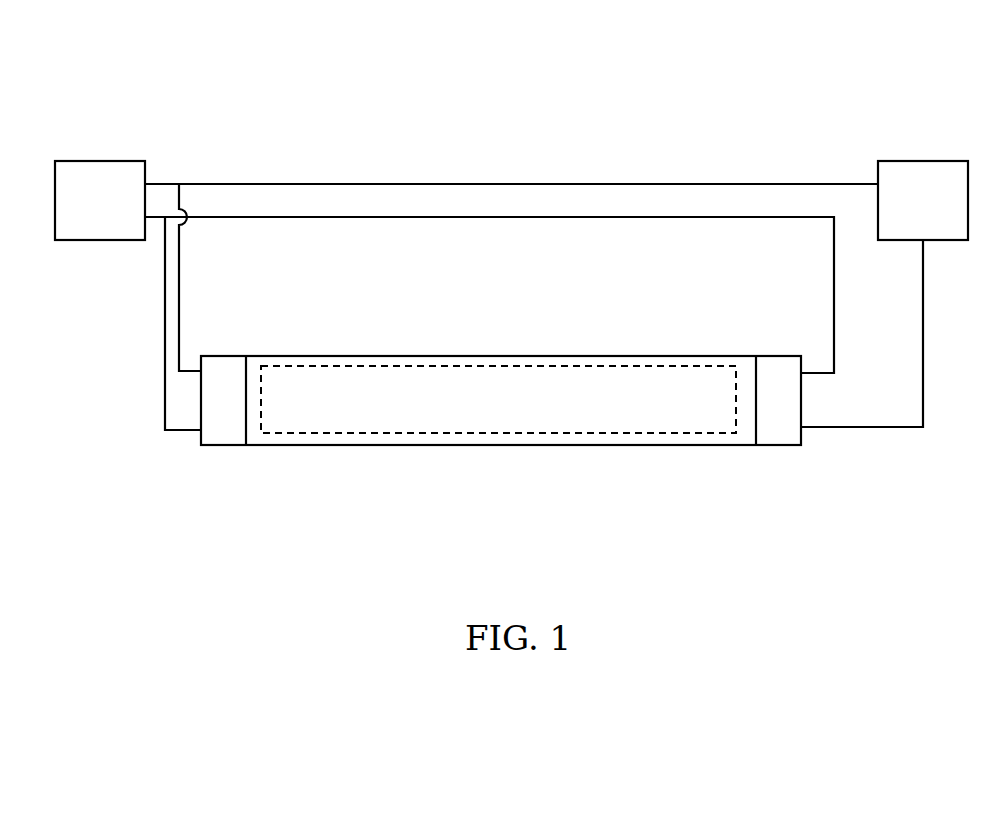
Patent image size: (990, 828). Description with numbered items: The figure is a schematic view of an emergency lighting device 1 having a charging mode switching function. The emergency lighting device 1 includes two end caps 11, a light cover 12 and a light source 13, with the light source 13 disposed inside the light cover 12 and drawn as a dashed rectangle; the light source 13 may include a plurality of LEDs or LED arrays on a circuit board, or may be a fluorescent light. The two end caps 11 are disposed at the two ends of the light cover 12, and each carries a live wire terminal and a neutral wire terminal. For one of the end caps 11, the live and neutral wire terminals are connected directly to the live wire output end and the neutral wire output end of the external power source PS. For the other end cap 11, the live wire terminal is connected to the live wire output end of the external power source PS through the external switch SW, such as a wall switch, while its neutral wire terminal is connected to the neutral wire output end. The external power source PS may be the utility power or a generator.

The emergency lighting device 1 is at (492, 411).
The end cap 11 is at (222, 446).
The light cover 12 is at (257, 360).
The light source 13 is at (276, 433).
The external power source PS is at (111, 172).
The external switch SW is at (903, 173).